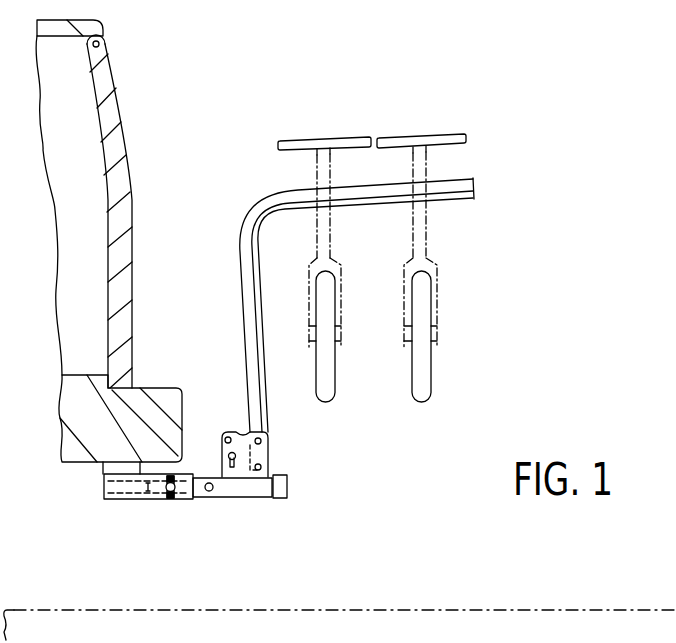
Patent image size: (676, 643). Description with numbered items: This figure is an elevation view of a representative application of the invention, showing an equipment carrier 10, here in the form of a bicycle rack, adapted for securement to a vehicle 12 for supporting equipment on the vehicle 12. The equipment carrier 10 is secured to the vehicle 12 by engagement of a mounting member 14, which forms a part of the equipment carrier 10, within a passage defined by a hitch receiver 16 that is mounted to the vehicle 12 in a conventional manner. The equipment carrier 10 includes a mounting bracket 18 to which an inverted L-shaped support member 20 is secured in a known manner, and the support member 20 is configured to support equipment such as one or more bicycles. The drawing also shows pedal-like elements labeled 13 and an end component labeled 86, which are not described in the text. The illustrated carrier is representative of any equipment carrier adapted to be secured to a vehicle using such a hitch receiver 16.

The equipment carrier 10 is at (465, 232).
The vehicle 12 is at (137, 36).
The pedals 13 is at (342, 348).
The mounting member 14 is at (222, 500).
The hitch receiver 16 is at (131, 500).
The mounting bracket 18 is at (232, 434).
The support member 20 is at (246, 203).
The end cap 86 is at (280, 500).